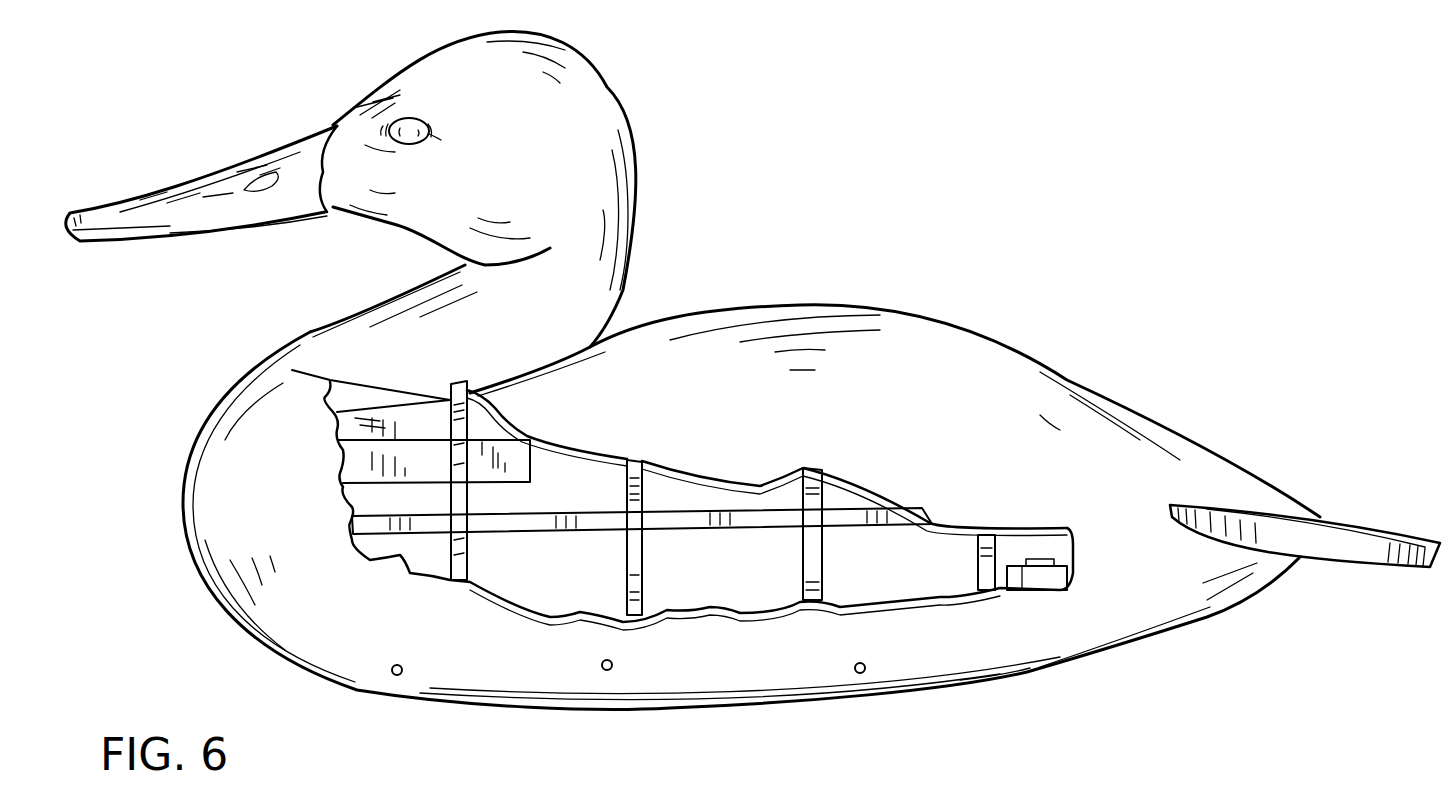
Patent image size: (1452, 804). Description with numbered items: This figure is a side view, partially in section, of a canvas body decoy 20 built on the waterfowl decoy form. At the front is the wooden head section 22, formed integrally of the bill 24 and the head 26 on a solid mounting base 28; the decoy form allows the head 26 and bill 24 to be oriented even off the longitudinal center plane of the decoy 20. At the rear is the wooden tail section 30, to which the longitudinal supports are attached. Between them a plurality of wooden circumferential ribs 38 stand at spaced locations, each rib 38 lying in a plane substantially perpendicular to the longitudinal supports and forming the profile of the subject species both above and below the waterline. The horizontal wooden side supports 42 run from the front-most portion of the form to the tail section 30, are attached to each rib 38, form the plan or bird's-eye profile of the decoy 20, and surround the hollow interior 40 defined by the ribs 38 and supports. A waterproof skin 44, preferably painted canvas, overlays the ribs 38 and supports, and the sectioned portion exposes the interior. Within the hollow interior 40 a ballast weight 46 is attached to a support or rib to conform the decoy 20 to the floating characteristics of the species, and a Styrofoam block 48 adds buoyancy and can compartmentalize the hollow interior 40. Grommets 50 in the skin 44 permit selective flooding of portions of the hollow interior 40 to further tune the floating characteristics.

The canvas body decoy 20 is at (968, 262).
The head section 22 is at (641, 155).
The bill 24 is at (200, 192).
The head 26 is at (523, 168).
The mounting base 28 is at (353, 427).
The tail section 30 is at (1360, 527).
The circumferential ribs 38 is at (457, 550).
The hollow interior 40 is at (540, 564).
The horizontal side supports 42 is at (743, 522).
The waterproof skin 44 is at (874, 404).
The ballast weight 46 is at (1045, 575).
The Styrofoam block 48 is at (353, 463).
The grommets 50 is at (393, 675).